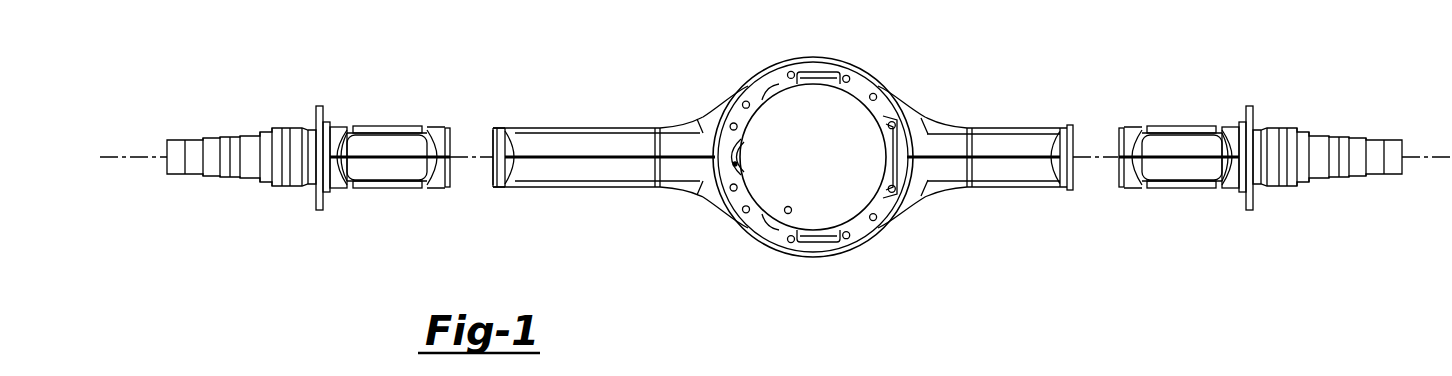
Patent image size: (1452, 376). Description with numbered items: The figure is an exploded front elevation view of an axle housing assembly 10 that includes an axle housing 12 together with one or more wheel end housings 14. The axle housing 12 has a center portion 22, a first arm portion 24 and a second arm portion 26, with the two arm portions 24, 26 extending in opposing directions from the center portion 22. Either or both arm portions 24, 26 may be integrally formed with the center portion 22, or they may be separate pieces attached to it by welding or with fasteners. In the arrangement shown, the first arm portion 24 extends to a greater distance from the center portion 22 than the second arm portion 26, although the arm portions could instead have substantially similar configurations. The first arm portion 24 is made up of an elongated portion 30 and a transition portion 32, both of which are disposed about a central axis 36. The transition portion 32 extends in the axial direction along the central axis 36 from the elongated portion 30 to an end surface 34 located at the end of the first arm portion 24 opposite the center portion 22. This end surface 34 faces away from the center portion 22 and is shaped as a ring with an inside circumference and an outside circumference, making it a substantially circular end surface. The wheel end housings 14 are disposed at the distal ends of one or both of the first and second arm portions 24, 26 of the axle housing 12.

The axle housing assembly 10 is at (378, 88).
The axle housing 12 is at (752, 48).
The wheel end housing 14 is at (213, 108).
The center portion 22 is at (864, 68).
The first arm portion 24 is at (587, 128).
The second arm portion 26 is at (1015, 128).
The elongated portion 30 is at (590, 188).
The transition portion 32 is at (495, 188).
The end surface 34 is at (491, 179).
The central axis 36 is at (1099, 157).